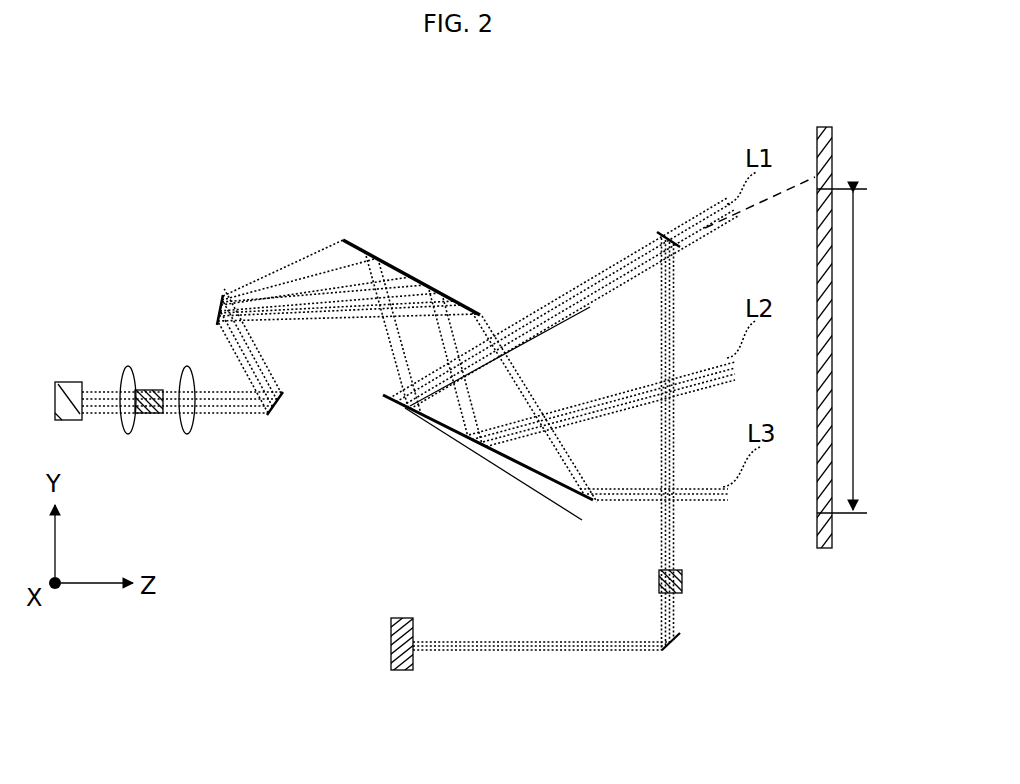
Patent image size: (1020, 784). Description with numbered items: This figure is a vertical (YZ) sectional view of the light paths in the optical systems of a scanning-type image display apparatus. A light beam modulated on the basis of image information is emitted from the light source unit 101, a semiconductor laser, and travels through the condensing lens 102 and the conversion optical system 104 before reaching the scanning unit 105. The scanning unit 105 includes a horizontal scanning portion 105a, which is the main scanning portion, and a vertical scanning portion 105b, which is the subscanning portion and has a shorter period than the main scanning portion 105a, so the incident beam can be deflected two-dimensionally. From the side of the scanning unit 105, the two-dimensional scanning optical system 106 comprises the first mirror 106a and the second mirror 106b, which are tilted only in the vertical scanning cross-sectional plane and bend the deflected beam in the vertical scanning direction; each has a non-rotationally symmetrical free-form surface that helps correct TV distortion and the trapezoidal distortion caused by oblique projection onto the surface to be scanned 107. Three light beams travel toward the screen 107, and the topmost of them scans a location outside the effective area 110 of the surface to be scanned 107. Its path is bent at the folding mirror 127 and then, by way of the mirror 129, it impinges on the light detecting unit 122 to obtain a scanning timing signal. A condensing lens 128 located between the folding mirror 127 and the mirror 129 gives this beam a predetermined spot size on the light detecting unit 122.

The light source unit 101 is at (70, 421).
The condensing lens 102 is at (126, 366).
The conversion optical system 104 is at (185, 366).
The scanning unit 105 is at (194, 231).
The horizontal scanning portion 105a is at (285, 396).
The vertical scanning portion 105b is at (221, 303).
The two-dimensional scanning optical system 106 is at (427, 193).
The first mirror 106a is at (439, 283).
The second mirror 106b is at (527, 485).
The surface to be scanned 107 is at (833, 95).
The effective area 110 is at (854, 364).
The light detecting unit 122 is at (400, 611).
The folding mirror 127 is at (661, 221).
The condensing lens 128 is at (683, 575).
The mirror 129 is at (674, 652).